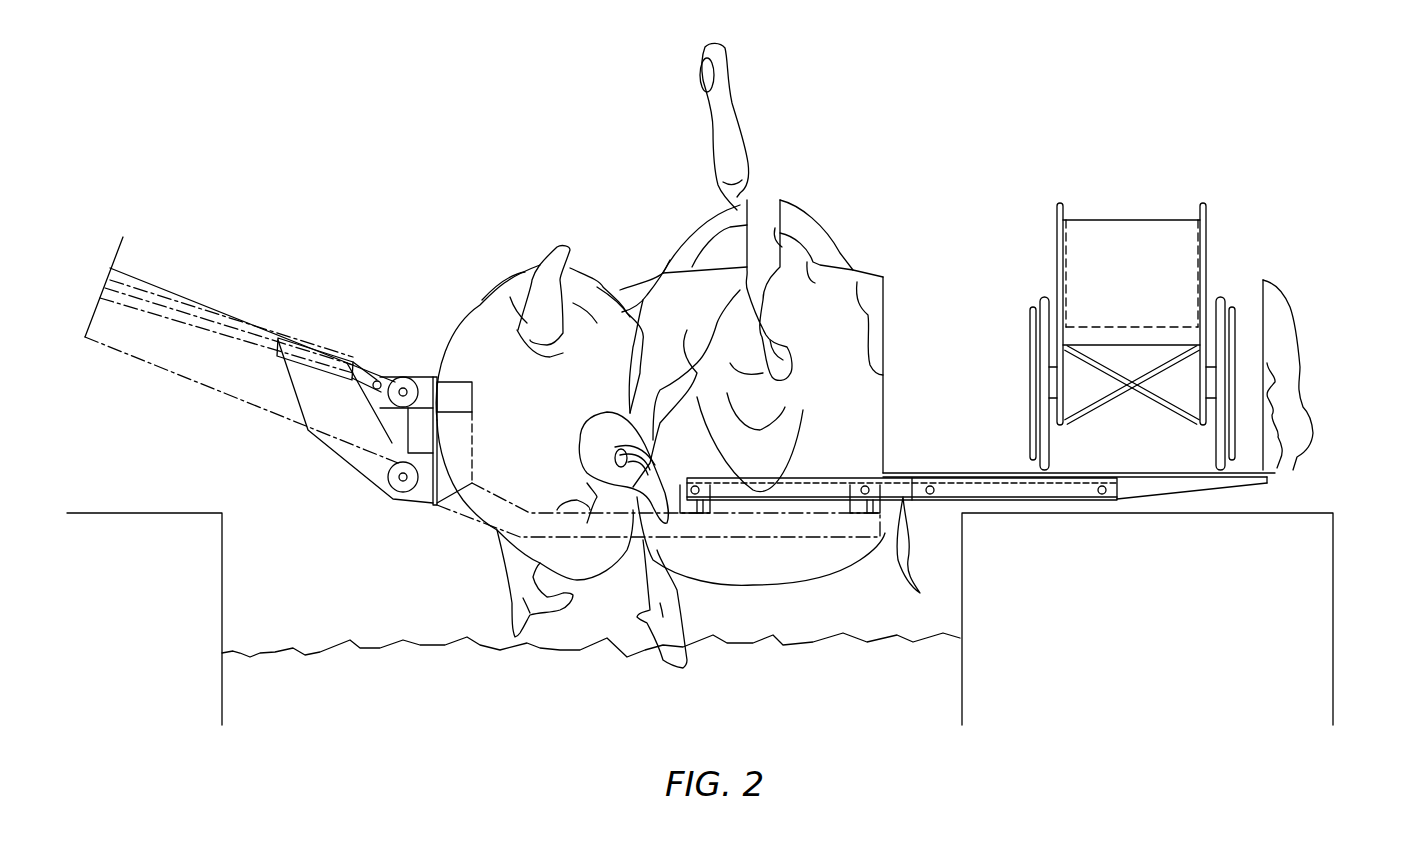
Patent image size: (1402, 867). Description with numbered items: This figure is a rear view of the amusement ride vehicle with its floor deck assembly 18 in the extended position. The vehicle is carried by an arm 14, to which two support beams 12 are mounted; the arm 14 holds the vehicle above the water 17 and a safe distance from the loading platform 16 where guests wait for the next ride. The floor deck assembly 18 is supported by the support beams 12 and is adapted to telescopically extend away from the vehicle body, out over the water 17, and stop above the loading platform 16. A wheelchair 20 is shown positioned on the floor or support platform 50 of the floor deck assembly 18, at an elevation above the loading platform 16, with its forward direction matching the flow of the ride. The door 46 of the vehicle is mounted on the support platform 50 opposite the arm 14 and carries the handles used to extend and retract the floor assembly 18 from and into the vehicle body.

The support beams 12 is at (500, 513).
The arm 14 is at (173, 347).
The loading platform 16 is at (1166, 599).
The water 17 is at (576, 703).
The floor deck assembly 18 is at (1302, 489).
The wheelchair 20 is at (1146, 298).
The door 46 is at (1288, 332).
The support platform 50 is at (945, 477).